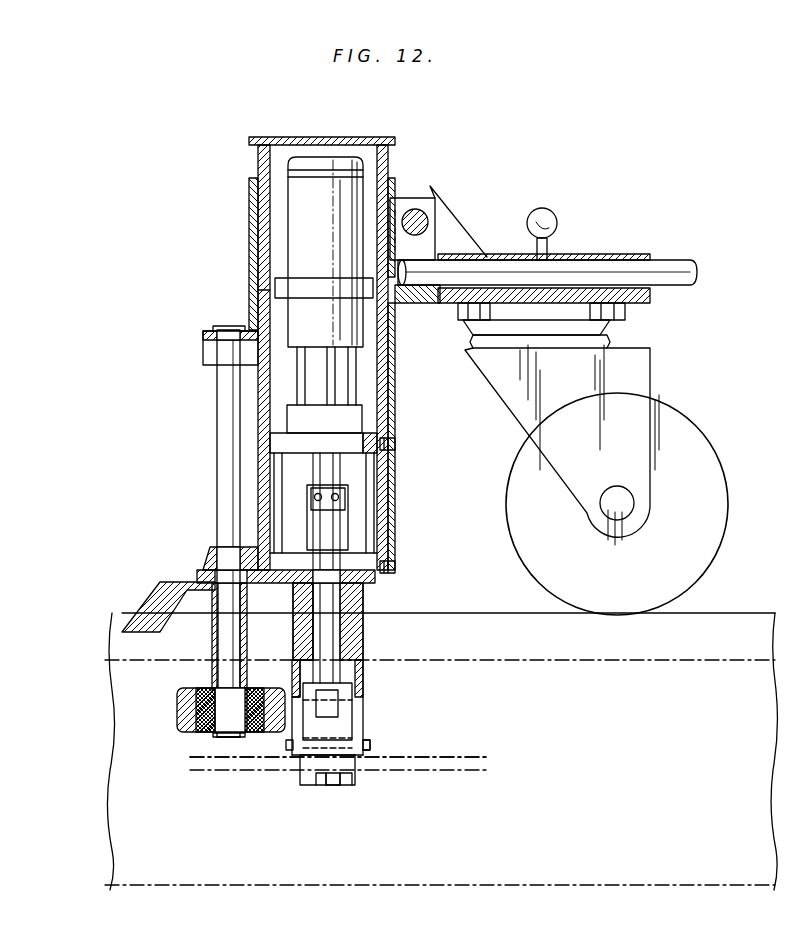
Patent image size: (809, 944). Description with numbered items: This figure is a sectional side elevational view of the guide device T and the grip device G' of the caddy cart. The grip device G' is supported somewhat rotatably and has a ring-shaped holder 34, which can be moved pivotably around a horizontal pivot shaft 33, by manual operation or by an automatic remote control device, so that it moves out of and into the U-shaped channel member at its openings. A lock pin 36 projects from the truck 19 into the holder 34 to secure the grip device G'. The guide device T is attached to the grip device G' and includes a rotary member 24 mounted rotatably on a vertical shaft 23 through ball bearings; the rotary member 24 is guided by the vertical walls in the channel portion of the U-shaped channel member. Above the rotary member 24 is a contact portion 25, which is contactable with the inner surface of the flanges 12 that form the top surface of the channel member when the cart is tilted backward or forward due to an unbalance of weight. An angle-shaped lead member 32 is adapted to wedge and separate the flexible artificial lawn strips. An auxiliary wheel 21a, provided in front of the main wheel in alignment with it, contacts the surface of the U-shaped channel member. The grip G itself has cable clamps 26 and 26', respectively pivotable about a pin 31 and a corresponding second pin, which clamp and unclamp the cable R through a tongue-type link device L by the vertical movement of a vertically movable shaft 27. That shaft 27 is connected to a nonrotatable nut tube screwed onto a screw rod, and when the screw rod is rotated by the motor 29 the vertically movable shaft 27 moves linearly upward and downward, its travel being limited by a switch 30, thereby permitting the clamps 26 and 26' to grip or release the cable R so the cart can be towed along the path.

The flange 12 is at (490, 620).
The truck 19 is at (655, 298).
The auxiliary wheel 21a is at (700, 440).
The vertical shaft 23 is at (228, 405).
The rotary member 24 is at (180, 712).
The contact portion 25 is at (197, 690).
The cable clamp 26 is at (320, 794).
The cable clamp 26' is at (346, 798).
The vertically movable shaft 27 is at (328, 596).
The motor 29 is at (330, 158).
The switch 30 is at (345, 510).
The pin 31 is at (288, 745).
The angle-shaped lead member 32 is at (145, 590).
The horizontal pivot shaft 33 is at (415, 212).
The ring-shaped holder 34 is at (252, 222).
The lock pin 36 is at (578, 268).
The tongue-type link device L is at (342, 734).
The grip G is at (389, 732).
The grip device G' is at (218, 283).
The cable R is at (425, 757).
The guide device T is at (180, 732).